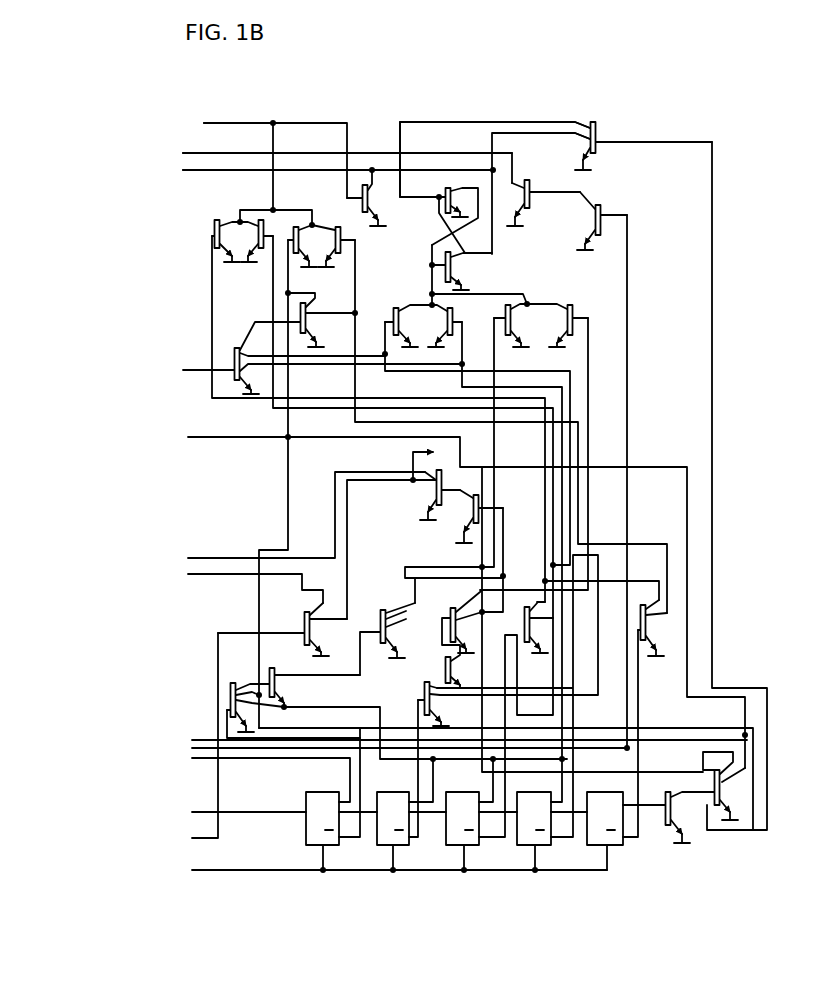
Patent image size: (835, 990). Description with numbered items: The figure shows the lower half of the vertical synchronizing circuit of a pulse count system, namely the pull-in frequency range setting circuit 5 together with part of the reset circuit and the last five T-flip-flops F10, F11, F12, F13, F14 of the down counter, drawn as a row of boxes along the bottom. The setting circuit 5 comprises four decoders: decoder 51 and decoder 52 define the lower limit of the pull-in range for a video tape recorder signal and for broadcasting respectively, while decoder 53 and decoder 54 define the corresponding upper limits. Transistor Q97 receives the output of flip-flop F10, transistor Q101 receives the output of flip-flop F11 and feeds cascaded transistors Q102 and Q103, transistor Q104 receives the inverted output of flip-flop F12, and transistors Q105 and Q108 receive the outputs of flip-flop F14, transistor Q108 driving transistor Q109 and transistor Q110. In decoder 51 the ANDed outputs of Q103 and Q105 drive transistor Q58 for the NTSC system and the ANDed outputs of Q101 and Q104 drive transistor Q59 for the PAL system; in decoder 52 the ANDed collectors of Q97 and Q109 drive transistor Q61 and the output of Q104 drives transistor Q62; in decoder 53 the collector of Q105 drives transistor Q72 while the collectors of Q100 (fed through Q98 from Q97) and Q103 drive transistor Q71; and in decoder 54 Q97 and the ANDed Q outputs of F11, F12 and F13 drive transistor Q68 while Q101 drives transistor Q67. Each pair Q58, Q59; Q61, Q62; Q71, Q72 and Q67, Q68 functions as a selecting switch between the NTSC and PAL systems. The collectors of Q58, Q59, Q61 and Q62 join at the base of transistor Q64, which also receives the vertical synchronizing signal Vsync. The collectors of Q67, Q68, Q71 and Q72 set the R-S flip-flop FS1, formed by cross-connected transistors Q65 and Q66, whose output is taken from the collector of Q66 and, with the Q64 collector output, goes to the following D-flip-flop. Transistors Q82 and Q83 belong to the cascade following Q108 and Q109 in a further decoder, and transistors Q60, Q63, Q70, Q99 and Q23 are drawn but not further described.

The vertical synchronizing signal Vsync is at (238, 110).
The flip-flop FS1 is at (438, 190).
The pull-in frequency range setting circuit 5 is at (380, 264).
The decoder 51 is at (240, 238).
The decoder 52 is at (318, 243).
The decoder 53 is at (537, 314).
The decoder 54 is at (423, 332).
The transistor Q58 is at (216, 227).
The transistor Q59 is at (256, 259).
The transistor Q60 is at (338, 358).
The transistor Q61 is at (302, 257).
The transistor Q62 is at (333, 262).
The transistor Q63 is at (321, 320).
The transistor Q64 is at (375, 198).
The transistor Q65 is at (440, 220).
The transistor Q66 is at (444, 271).
The transistor Q67 is at (405, 318).
The transistor Q68 is at (456, 323).
The transistor Q70 is at (602, 213).
The transistor Q71 is at (512, 335).
The transistor Q72 is at (557, 318).
The transistor Q23 is at (543, 193).
The transistor Q110 is at (643, 144).
The transistor Q82 is at (422, 486).
The transistor Q83 is at (476, 509).
The transistor Q97 is at (251, 698).
The transistor Q98 is at (312, 677).
The transistor Q99 is at (282, 625).
The transistor Q100 is at (382, 635).
The transistor Q101 is at (403, 704).
The transistor Q102 is at (431, 653).
The transistor Q103 is at (451, 621).
The transistor Q104 is at (535, 642).
The transistor Q105 is at (656, 638).
The transistor Q108 is at (683, 838).
The transistor Q109 is at (726, 804).
The T-flip-flop F10 is at (314, 848).
The T-flip-flop F11 is at (386, 848).
The T-flip-flop F12 is at (456, 848).
The T-flip-flop F13 is at (524, 848).
The T-flip-flop F14 is at (596, 848).